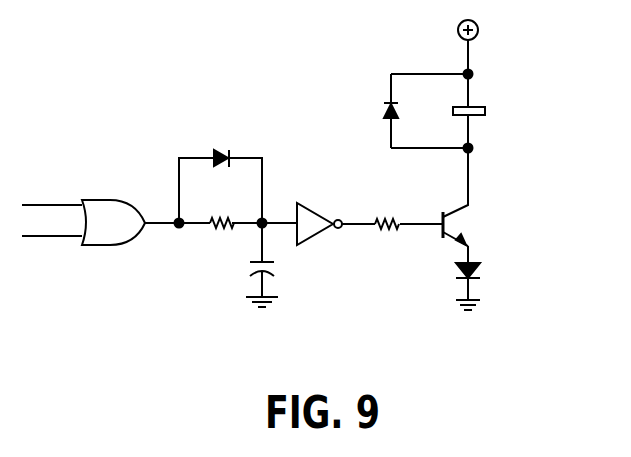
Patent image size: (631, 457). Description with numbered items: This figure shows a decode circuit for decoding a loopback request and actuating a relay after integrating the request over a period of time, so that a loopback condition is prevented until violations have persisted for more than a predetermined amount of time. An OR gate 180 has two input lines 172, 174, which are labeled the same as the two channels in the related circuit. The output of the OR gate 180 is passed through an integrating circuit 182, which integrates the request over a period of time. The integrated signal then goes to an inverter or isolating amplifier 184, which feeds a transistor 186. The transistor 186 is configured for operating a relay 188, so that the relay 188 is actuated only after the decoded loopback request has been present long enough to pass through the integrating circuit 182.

The first input line 172 is at (50, 205).
The second input line 174 is at (50, 237).
The OR gate 180 is at (105, 246).
The integrating circuit 182 is at (226, 132).
The inverter or isolating amplifier 184 is at (320, 250).
The transistor 186 is at (489, 228).
The relay 188 is at (501, 102).